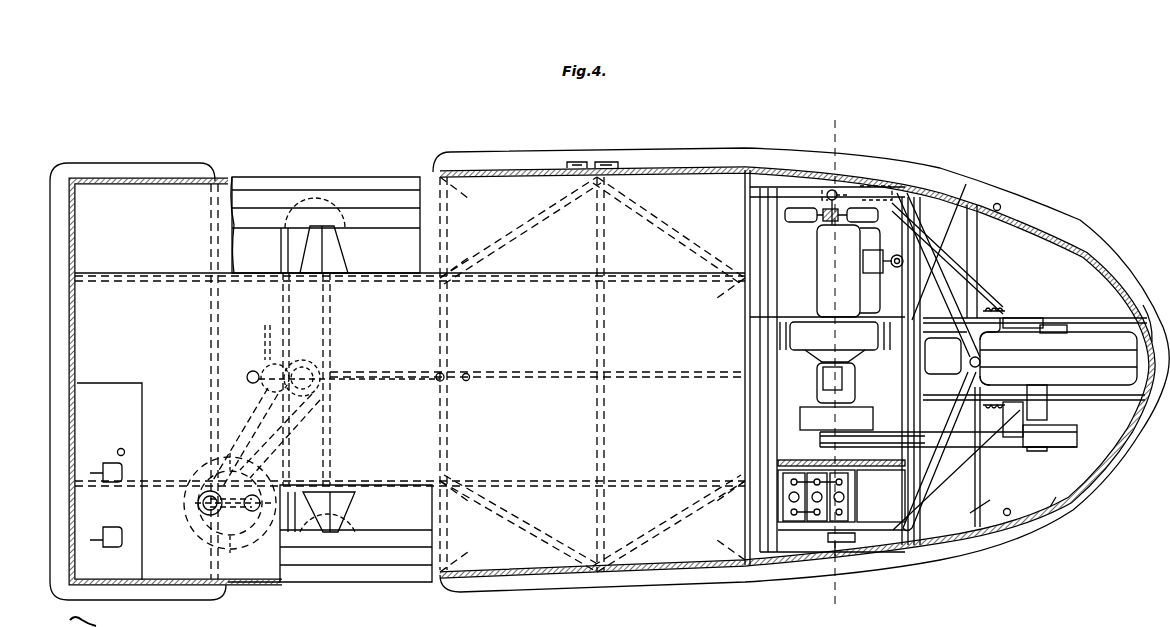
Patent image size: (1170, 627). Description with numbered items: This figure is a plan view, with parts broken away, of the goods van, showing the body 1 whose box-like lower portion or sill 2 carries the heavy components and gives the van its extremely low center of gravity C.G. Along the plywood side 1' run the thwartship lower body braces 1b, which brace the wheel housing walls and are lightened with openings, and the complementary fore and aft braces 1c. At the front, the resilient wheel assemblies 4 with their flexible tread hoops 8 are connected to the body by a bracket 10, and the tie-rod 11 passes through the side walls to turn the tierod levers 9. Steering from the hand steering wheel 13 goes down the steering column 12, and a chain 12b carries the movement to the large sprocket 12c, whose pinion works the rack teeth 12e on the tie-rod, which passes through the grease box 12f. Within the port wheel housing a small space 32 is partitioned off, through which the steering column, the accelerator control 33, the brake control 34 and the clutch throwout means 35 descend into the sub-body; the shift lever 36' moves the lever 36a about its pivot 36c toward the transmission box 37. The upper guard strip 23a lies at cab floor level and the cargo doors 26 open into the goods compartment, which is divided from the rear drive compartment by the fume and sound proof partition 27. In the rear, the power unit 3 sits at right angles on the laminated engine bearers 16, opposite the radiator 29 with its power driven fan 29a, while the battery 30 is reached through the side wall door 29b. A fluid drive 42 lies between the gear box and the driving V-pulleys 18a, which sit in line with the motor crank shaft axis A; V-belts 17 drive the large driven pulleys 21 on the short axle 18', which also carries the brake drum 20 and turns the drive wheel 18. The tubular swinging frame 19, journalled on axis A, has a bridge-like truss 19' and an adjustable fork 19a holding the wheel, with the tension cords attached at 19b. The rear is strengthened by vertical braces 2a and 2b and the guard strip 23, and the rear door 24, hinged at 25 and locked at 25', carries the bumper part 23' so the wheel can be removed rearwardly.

The body 1 is at (796, 239).
The ply-wood side 1' is at (410, 288).
The lower body braces 1b is at (210, 357).
The complementary braces 1c is at (178, 283).
The sill 2 is at (68, 326).
The vertical brace 2a is at (1078, 318).
The vertical brace 2b is at (1110, 401).
The power unit 3 is at (860, 258).
The resilient wheel assemblies 4 is at (335, 228).
The flexible tread hoops 8 is at (348, 186).
The tierod levers 9 is at (290, 232).
The bracket 10 is at (344, 256).
The tie-rod 11 is at (282, 321).
The steering column 12 is at (205, 505).
The chain 12b is at (252, 410).
The large sprocket 12c is at (335, 384).
The rack teeth 12e is at (302, 360).
The grease box 12f is at (271, 364).
The hand steering wheel 13 is at (206, 540).
The engine bearers 16 is at (770, 400).
The V-belt drive 17 is at (1010, 438).
The drive wheel 18 is at (1058, 340).
The short axle 18' is at (1057, 402).
The driving V-pulleys 18a is at (822, 440).
The tubular swinging frame 19 is at (956, 357).
The bridge-like truss 19' is at (952, 356).
The adjustable fork 19a is at (1023, 318).
The cord attachment 19b is at (996, 308).
The brake drum 20 is at (1050, 325).
The driven pulleys 21 is at (1058, 448).
The guard strip 23 is at (801, 381).
The bumper part 23' is at (1149, 303).
The upper guard strip 23a is at (68, 438).
The rear door 24 is at (1053, 503).
The hinge 25 is at (1013, 195).
The lock 25' is at (992, 501).
The doors 26 is at (540, 170).
The partition 27 is at (748, 522).
The radiator 29 is at (840, 190).
The power driven fan 29a is at (803, 223).
The side wall door 29b is at (826, 570).
The battery 30 is at (849, 494).
The small space 32 is at (152, 487).
The accelerator control 33 is at (117, 452).
The brake control 34 is at (112, 483).
The clutch throwout means 35 is at (112, 548).
The shift lever 36' is at (251, 364).
The lever 36a is at (822, 369).
The pivot 36c is at (430, 384).
The transmission box 37 is at (852, 367).
The fluid drive 42 is at (862, 414).
The motor crank shaft axis A is at (836, 369).
The center of gravity C.G. is at (468, 381).